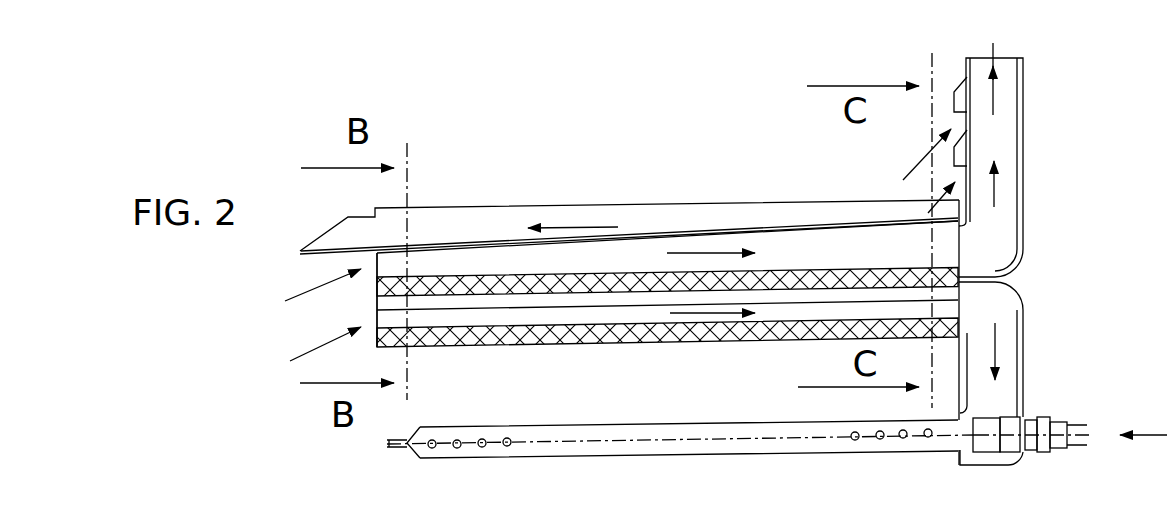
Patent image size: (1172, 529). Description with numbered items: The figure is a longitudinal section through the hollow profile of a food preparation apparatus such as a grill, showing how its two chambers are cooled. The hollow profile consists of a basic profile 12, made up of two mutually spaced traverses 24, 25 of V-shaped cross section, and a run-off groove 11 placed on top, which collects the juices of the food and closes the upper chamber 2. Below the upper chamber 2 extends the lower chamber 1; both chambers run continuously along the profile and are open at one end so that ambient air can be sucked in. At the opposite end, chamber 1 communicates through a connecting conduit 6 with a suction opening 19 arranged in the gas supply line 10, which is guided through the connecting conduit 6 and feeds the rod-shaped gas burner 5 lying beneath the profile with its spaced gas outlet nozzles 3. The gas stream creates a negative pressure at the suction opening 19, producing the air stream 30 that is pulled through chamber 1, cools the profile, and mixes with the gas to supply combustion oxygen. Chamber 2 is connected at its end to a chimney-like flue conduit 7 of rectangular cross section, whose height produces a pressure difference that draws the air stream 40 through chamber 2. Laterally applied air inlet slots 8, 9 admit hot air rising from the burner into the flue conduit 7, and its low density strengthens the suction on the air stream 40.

The chamber 1 is at (627, 342).
The chamber 2 is at (838, 248).
The gas outlet nozzles 3 is at (503, 446).
The rod-shaped gas burner 5 is at (583, 450).
The connecting conduit 6 is at (1008, 318).
The flue conduit 7 is at (1002, 223).
The air inlet slot 8 is at (968, 107).
The air inlet slot 9 is at (968, 151).
The gas supply line 10 is at (1057, 430).
The run-off groove 11 is at (478, 225).
The basic profile 12 is at (575, 342).
The suction opening 19 is at (983, 430).
The traverse 24 is at (477, 295).
The traverse 25 is at (432, 347).
The air stream 30 is at (320, 348).
The air stream 40 is at (307, 289).